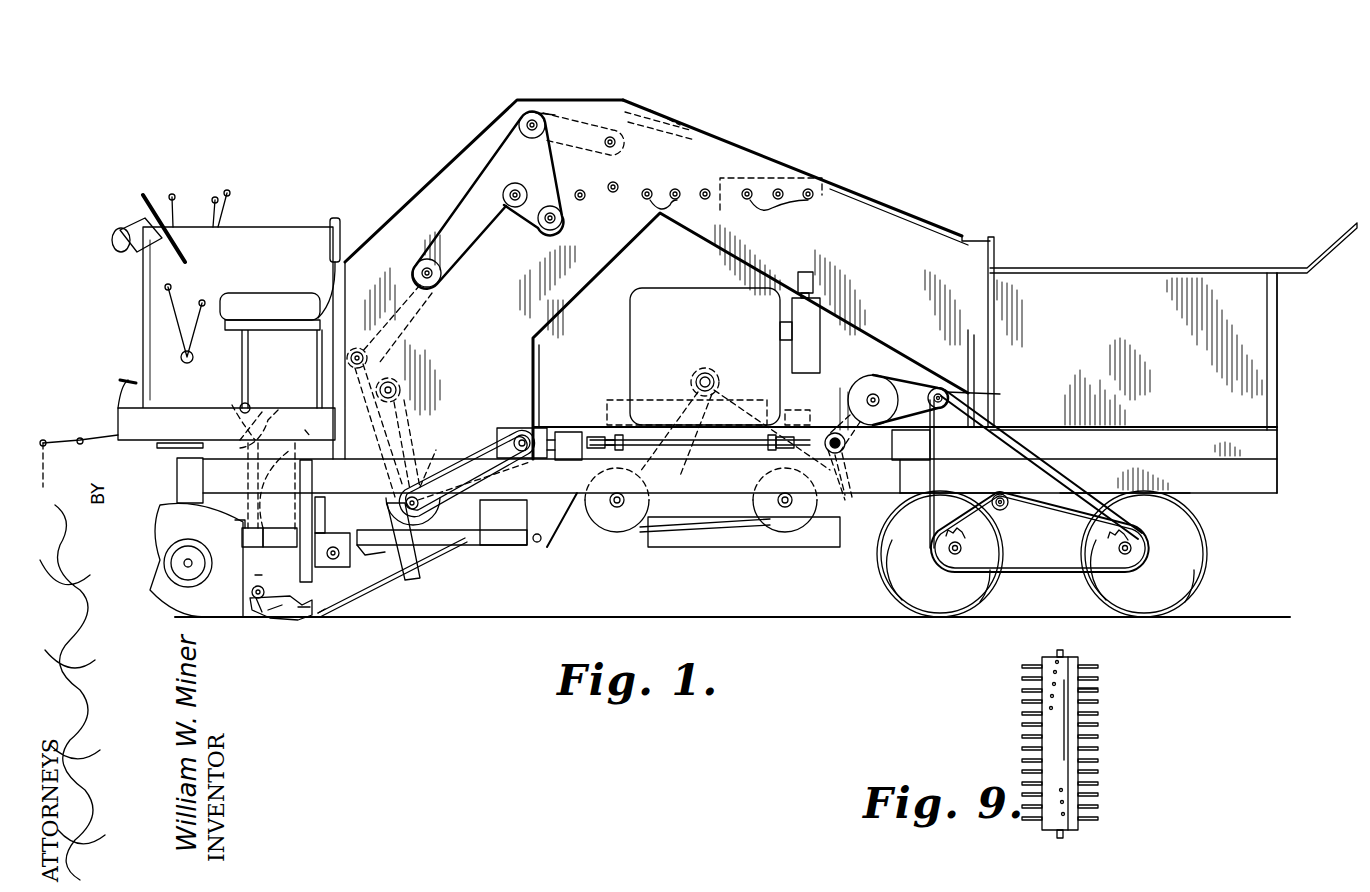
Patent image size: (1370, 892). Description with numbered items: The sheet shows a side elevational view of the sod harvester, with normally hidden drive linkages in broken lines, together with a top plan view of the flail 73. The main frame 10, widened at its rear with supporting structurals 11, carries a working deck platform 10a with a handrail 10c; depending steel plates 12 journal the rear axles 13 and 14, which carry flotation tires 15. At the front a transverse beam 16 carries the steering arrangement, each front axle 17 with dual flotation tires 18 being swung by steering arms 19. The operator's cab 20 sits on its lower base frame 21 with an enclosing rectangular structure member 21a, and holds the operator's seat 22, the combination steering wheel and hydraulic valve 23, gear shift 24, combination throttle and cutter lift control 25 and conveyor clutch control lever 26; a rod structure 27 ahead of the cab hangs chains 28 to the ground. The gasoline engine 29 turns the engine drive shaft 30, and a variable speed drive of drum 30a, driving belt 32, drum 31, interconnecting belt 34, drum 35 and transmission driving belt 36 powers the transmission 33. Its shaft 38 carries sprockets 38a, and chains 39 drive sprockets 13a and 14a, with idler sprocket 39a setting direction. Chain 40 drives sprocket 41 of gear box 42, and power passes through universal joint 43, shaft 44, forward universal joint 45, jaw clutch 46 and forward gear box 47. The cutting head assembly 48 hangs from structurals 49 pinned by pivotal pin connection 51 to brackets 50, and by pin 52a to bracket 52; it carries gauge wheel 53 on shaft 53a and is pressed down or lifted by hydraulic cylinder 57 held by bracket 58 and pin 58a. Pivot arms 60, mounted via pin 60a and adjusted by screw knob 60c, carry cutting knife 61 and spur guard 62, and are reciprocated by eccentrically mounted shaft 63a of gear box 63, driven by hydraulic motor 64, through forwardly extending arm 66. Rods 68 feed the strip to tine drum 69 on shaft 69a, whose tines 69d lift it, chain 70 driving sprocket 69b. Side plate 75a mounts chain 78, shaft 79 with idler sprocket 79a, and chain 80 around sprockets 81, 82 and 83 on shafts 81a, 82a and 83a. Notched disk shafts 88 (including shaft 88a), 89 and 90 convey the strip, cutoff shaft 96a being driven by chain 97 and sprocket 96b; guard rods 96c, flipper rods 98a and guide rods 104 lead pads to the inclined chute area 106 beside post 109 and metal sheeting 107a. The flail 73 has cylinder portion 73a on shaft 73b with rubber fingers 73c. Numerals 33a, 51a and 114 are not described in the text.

In FIG. 1, the main frame 10 is at (537, 484).
In FIG. 1, the working deck platform 10a is at (1270, 429).
In FIG. 1, the handrail 10c is at (1175, 266).
In FIG. 1, the supporting structurals 11 is at (1260, 484).
In FIG. 1, the steel plates 12 is at (1028, 559).
In FIG. 1, the rear axle 13 is at (1130, 541).
In FIG. 1, the sprocket 13a is at (1095, 536).
In FIG. 1, the rear axle 14 is at (962, 549).
In FIG. 1, the sprocket 14a is at (954, 526).
In FIG. 1, the flotation tires 15 is at (1065, 592).
In FIG. 1, the transverse beam 16 is at (178, 483).
In FIG. 1, the front axle 17 is at (184, 566).
In FIG. 1, the dual flotation tires 18 is at (160, 512).
In FIG. 1, the steering arms 19 is at (154, 448).
In FIG. 1, the operator's cab 20 is at (292, 228).
In FIG. 1, the lower base frame 21 is at (125, 420).
In FIG. 1, the rectangular structure member 21a is at (238, 262).
In FIG. 1, the operator's seat 22 is at (292, 298).
In FIG. 1, the combination steering wheel and hydraulic valve 23 is at (134, 219).
In FIG. 1, the gear shift 24 is at (176, 197).
In FIG. 1, the combination throttle and cutter lift control 25 is at (230, 193).
In FIG. 1, the conveyor clutch control lever 26 is at (175, 332).
In FIG. 1, the rod structure 27 is at (70, 440).
In FIG. 1, the chains 28 is at (50, 470).
In FIG. 1, the gasoline engine 29 is at (630, 356).
In FIG. 1, the engine drive shaft 30 is at (705, 370).
In FIG. 1, the drum 30a is at (725, 374).
In FIG. 1, the driving belt 32 is at (672, 392).
In FIG. 1, the drum 31 is at (617, 534).
In FIG. 1, the transmission 33 is at (915, 370).
In FIG. 1, the hydraulic cylinder 33a is at (880, 378).
In FIG. 1, the interconnecting belt 34 is at (748, 547).
In FIG. 1, the drum 35 is at (805, 512).
In FIG. 1, the transmission driving belt 36 is at (848, 500).
In FIG. 1, the shaft 38 is at (942, 386).
In FIG. 1, the sprocket 38a is at (975, 380).
In FIG. 1, the chains 39 is at (1010, 428).
In FIG. 1, the idler sprocket 39a is at (1006, 513).
In FIG. 1, the chain 40 is at (936, 446).
In FIG. 1, the sprocket 41 is at (850, 446).
In FIG. 1, the gear box 42 is at (888, 460).
In FIG. 1, the universal joint 43 is at (846, 456).
In FIG. 1, the shaft 44 is at (712, 447).
In FIG. 1, the forward universal joint 45 is at (600, 430).
In FIG. 1, the jaw clutch 46 is at (568, 432).
In FIG. 1, the forward gear box 47 is at (515, 426).
In FIG. 1, the cutting head assembly 48 is at (278, 623).
In FIG. 1, the structurals 49 is at (455, 546).
In FIG. 1, the brackets 50 is at (560, 530).
In FIG. 1, the pivotal pin connection 51 is at (538, 545).
In FIG. 1, the bracket 51a is at (237, 525).
In FIG. 1, the bracket 52 is at (258, 530).
In FIG. 1, the pin 52a is at (258, 500).
In FIG. 1, the gauge wheel 53 is at (258, 602).
In FIG. 1, the shaft 53a is at (258, 588).
In FIG. 1, the hydraulic cylinder 57 is at (262, 412).
In FIG. 1, the bracket 58 is at (215, 436).
In FIG. 1, the pin 58a is at (232, 405).
In FIG. 1, the pivot arms 60 is at (313, 577).
In FIG. 1, the pin 60a is at (281, 538).
In FIG. 1, the screw knob 60c is at (305, 438).
In FIG. 1, the cutting knife 61 is at (290, 622).
In FIG. 1, the spur guard 62 is at (306, 614).
In FIG. 1, the gear box 63 is at (385, 543).
In FIG. 1, the eccentrically mounted shaft 63a is at (370, 556).
In FIG. 1, the hydraulic motor 64 is at (343, 494).
In FIG. 1, the forwardly extending arm 66 is at (332, 545).
In FIG. 1, the rods 68 is at (330, 614).
In FIG. 1, the tine drum 69 is at (362, 524).
In FIG. 1, the shaft 69a is at (425, 480).
In FIG. 1, the sprocket 69b is at (472, 476).
In FIG. 1, the tines 69d is at (410, 578).
In FIG. 1, the chain 70 is at (505, 432).
In FIG. 1, the side plate 75a is at (400, 215).
In FIG. 1, the chain 78 is at (356, 350).
In FIG. 1, the shaft 79 is at (441, 276).
In FIG. 1, the idler sprocket 79a is at (432, 296).
In FIG. 1, the chain 80 is at (462, 200).
In FIG. 1, the sprocket 81 is at (530, 112).
In FIG. 1, the shaft 81a is at (545, 117).
In FIG. 1, the idler sprocket 82 is at (565, 224).
In FIG. 1, the shaft 82a is at (550, 231).
In FIG. 1, the sprocket 83 is at (512, 208).
In FIG. 1, the shaft 83a is at (518, 185).
In FIG. 1, the shafts 88 is at (584, 200).
In FIG. 1, the shaft 88a is at (614, 192).
In FIG. 1, the shafts 89 is at (652, 204).
In FIG. 1, the shafts 90 is at (777, 205).
In FIG. 1, the rotary shaft 96a is at (608, 150).
In FIG. 1, the sprocket 96b is at (665, 140).
In FIG. 1, the inclined rods 96c is at (678, 121).
In FIG. 1, the chain 97 is at (600, 112).
In FIG. 1, the rods 98a is at (805, 178).
In FIG. 1, the rods 104 is at (720, 185).
In FIG. 1, the inclined chute area 106 is at (905, 205).
In FIG. 1, the metal sheeting 107a is at (1270, 352).
In FIG. 1, the post 109 is at (994, 255).
In FIG. 1, the base 114 is at (762, 402).
In FIG. 9, the flail 73 is at (1030, 739).
In FIG. 9, the cylinder portion 73a is at (1068, 724).
In FIG. 9, the shaft 73b is at (1065, 836).
In FIG. 9, the rubber fingers 73c is at (1110, 691).